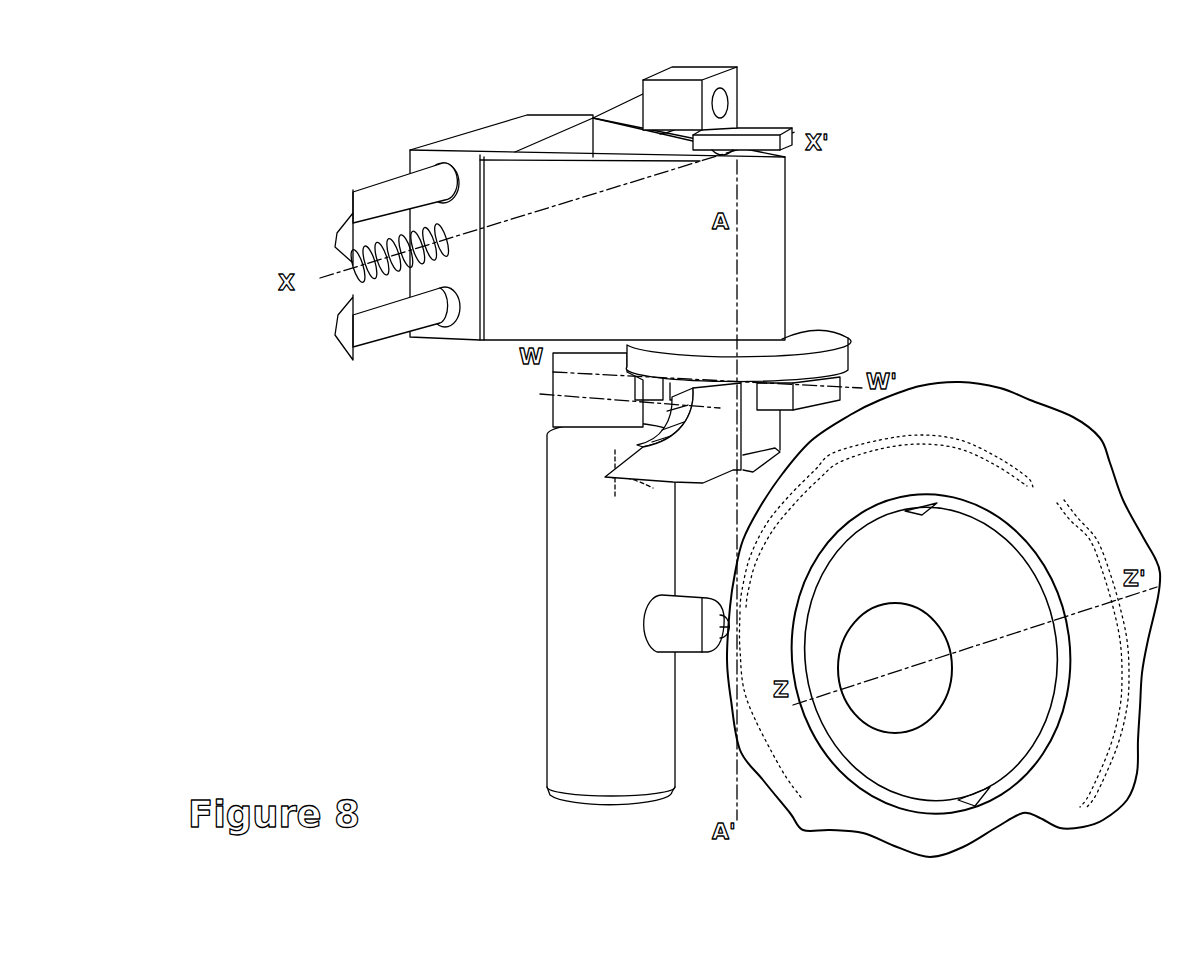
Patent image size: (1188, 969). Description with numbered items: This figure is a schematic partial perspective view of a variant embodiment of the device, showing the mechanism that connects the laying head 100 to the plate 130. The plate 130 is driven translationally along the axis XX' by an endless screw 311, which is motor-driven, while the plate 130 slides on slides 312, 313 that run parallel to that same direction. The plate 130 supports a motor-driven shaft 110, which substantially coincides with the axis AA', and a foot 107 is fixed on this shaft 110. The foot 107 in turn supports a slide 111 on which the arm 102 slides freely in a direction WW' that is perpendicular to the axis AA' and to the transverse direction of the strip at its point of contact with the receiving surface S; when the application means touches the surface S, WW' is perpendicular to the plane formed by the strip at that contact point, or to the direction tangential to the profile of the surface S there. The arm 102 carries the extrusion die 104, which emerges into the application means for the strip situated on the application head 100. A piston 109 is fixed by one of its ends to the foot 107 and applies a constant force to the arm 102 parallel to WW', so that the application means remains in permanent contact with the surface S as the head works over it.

The laying head 100 is at (678, 623).
The arm 102 is at (713, 443).
The extrusion die 104 is at (603, 628).
The foot 107 is at (822, 339).
The piston 109 is at (573, 405).
The motor-driven shaft 110 is at (737, 148).
The slide 111 is at (643, 447).
The plate 130 is at (540, 128).
The endless screw 311 is at (347, 257).
The slide 312 is at (397, 192).
The slide 313 is at (377, 347).
The receiving surface S is at (1047, 447).